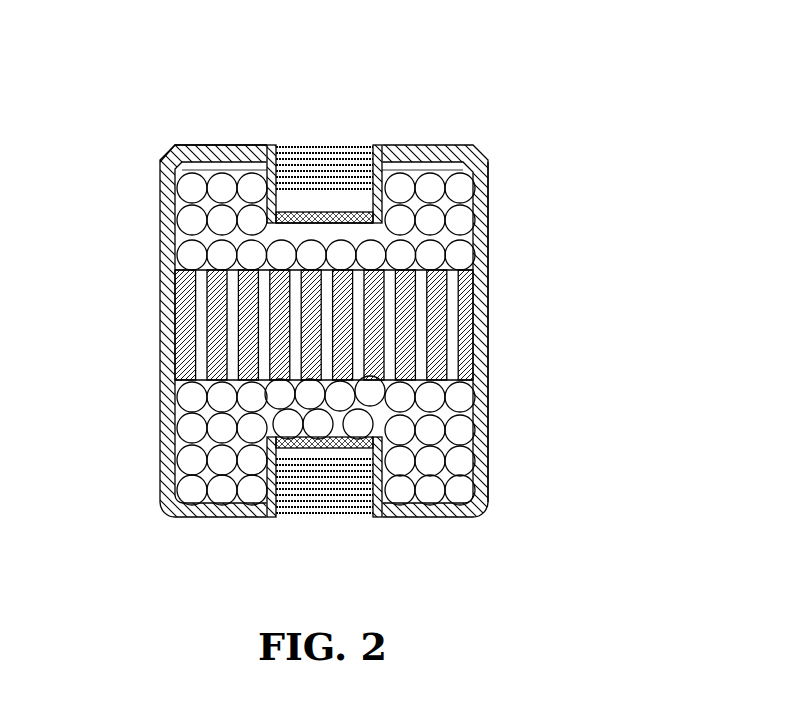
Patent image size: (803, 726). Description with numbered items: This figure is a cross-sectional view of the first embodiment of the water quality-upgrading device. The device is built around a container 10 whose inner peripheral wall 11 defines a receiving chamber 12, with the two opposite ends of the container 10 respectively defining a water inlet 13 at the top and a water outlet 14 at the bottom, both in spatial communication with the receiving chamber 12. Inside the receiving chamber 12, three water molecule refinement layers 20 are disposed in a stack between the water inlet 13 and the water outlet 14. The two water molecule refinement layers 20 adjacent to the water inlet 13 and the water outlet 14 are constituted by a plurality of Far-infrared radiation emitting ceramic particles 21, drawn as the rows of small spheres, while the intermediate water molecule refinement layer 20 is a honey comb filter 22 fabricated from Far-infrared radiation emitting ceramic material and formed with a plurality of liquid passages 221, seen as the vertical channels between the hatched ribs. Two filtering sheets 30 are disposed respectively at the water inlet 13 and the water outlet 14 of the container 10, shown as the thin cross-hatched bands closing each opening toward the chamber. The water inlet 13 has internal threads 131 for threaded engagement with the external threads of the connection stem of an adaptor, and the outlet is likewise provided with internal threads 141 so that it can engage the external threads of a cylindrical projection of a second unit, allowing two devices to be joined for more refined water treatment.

The container 10 is at (490, 150).
The inner peripheral wall 11 is at (468, 265).
The receiving chamber 12 is at (166, 153).
The water inlet 13 is at (367, 202).
The internal threads 131 is at (324, 156).
The water outlet 14 is at (365, 455).
The internal threads 141 is at (323, 504).
The water molecule refinement layer 20 is at (383, 339).
The Far-infrared radiation emitting ceramic particles 21 is at (463, 183).
The honey comb filter 22 is at (262, 325).
The liquid passage 221 is at (203, 358).
The filtering sheet 30 is at (298, 188).